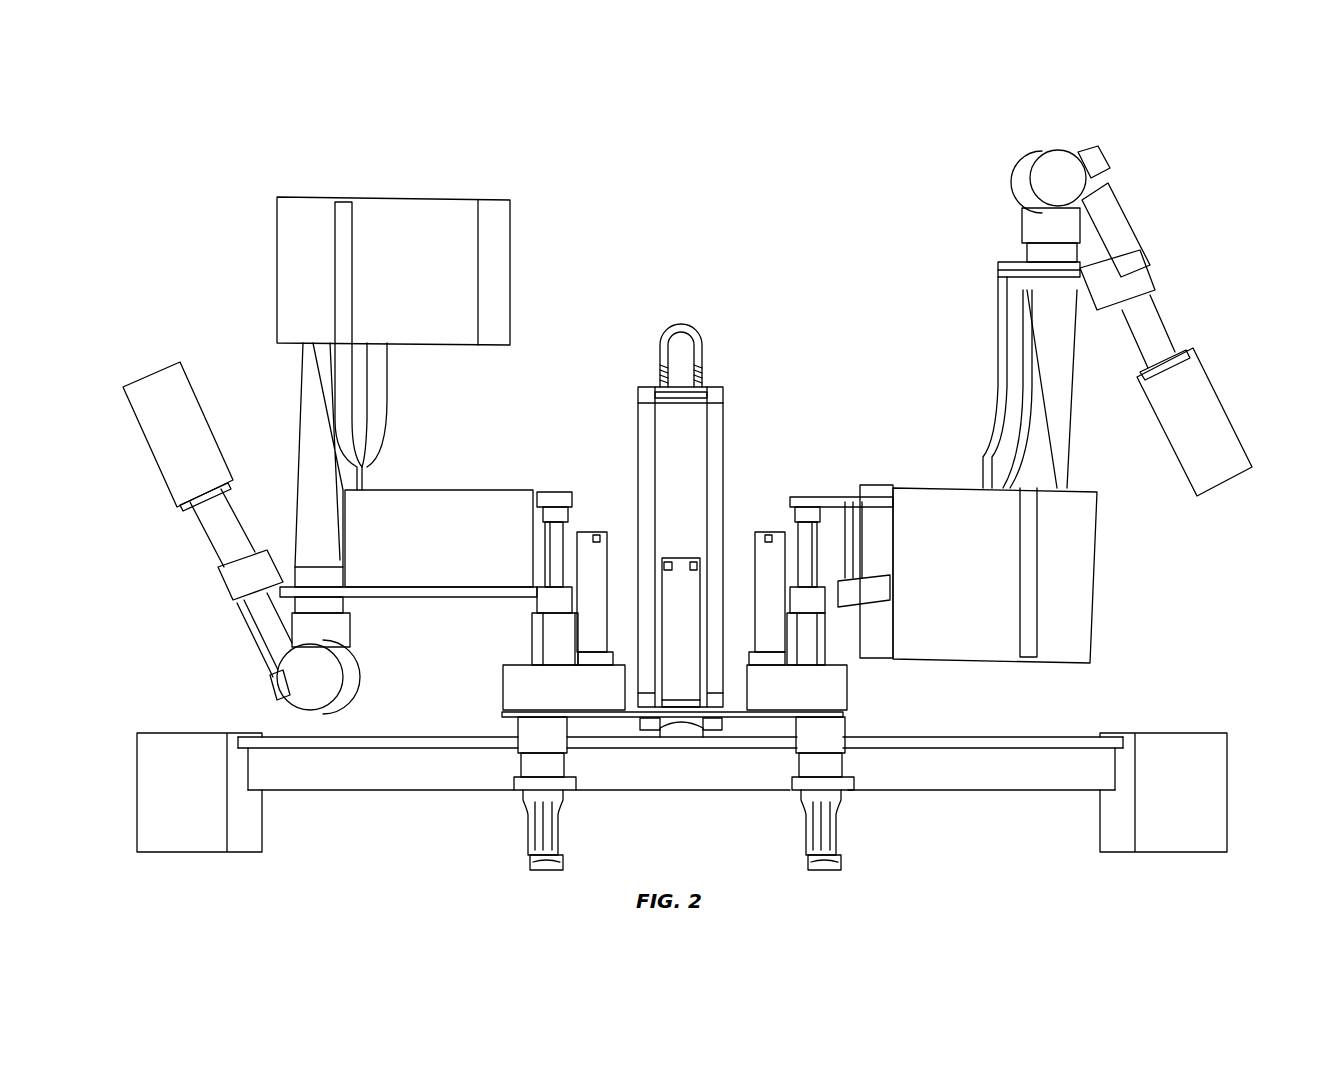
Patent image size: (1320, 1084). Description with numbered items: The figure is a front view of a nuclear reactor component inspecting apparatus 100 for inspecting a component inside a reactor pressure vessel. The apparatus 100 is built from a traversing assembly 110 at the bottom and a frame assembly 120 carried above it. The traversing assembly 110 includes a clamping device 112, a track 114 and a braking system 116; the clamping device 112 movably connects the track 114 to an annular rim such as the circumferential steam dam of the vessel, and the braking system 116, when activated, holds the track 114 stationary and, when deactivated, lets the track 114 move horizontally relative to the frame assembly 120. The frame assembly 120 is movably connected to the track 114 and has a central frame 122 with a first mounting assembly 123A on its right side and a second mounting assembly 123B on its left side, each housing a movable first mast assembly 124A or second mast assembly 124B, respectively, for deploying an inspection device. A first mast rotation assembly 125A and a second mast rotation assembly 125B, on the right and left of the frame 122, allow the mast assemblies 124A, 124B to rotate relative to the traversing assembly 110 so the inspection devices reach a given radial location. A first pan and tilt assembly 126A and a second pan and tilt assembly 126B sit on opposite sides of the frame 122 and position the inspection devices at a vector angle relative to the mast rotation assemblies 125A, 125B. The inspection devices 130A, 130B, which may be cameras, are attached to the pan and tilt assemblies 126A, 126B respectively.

The nuclear reactor component inspecting apparatus 100 is at (701, 217).
The traversing assembly 110 is at (719, 804).
The clamping device 112 is at (563, 830).
The track 114 is at (376, 790).
The braking system 116 is at (205, 864).
The frame assembly 120 is at (709, 342).
The frame 122 is at (725, 430).
The first mounting assembly 123A is at (774, 514).
The second mounting assembly 123B is at (580, 506).
The first mast assembly 124A is at (1072, 388).
The second mast assembly 124B is at (302, 440).
The first mast rotation assembly 125A is at (983, 315).
The second mast rotation assembly 125B is at (440, 180).
The first pan and tilt assembly 126A is at (1013, 146).
The second pan and tilt assembly 126B is at (277, 697).
The inspection device 130A is at (1215, 373).
The inspection device 130B is at (196, 392).